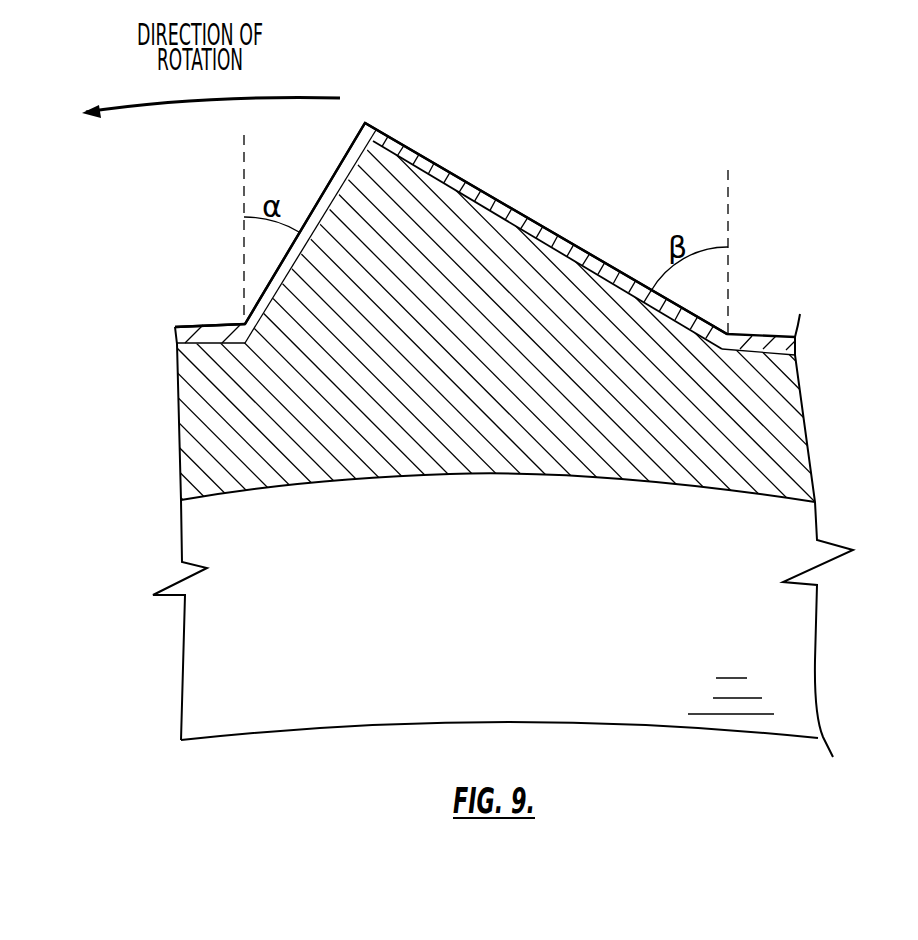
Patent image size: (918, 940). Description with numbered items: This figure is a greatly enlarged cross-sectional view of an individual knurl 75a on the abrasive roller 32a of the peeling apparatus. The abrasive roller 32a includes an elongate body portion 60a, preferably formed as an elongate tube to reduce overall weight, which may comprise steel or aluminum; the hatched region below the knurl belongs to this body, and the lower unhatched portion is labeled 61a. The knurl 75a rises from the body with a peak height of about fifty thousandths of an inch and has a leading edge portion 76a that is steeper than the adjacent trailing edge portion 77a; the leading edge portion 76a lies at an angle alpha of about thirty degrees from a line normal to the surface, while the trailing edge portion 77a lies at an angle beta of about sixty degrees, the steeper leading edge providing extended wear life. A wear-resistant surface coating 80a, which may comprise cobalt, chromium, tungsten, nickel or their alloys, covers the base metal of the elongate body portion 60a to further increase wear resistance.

The abrasive roller 32a is at (668, 158).
The knurl 75a is at (406, 145).
The trailing edge portion 77a is at (525, 213).
The leading edge portion 76a is at (328, 197).
The wear-resistant surface coating 80a is at (195, 324).
The elongate body portion 60a is at (181, 451).
The hub portion 61a is at (522, 635).